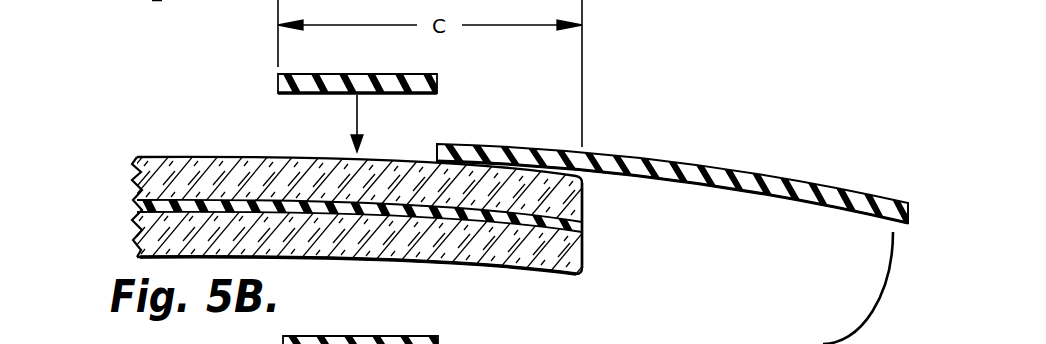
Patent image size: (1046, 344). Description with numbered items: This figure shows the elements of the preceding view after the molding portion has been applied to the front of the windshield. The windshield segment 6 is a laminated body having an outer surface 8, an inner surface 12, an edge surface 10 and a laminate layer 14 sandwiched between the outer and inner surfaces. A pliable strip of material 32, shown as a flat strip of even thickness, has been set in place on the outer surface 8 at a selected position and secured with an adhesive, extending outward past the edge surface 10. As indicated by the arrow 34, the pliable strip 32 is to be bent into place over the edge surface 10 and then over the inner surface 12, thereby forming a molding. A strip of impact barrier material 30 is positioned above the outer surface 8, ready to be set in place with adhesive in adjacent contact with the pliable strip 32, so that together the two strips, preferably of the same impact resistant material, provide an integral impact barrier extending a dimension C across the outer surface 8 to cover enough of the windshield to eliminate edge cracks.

The windshield segment 6 is at (182, 146).
The outer surface 8 is at (137, 180).
The laminate layer 14 is at (137, 207).
The inner surface 12 is at (137, 238).
The edge surface 10 is at (583, 203).
The strip of impact barrier material 30 is at (437, 85).
The pliable strip of material 32 is at (680, 162).
The arrow 34 is at (870, 305).